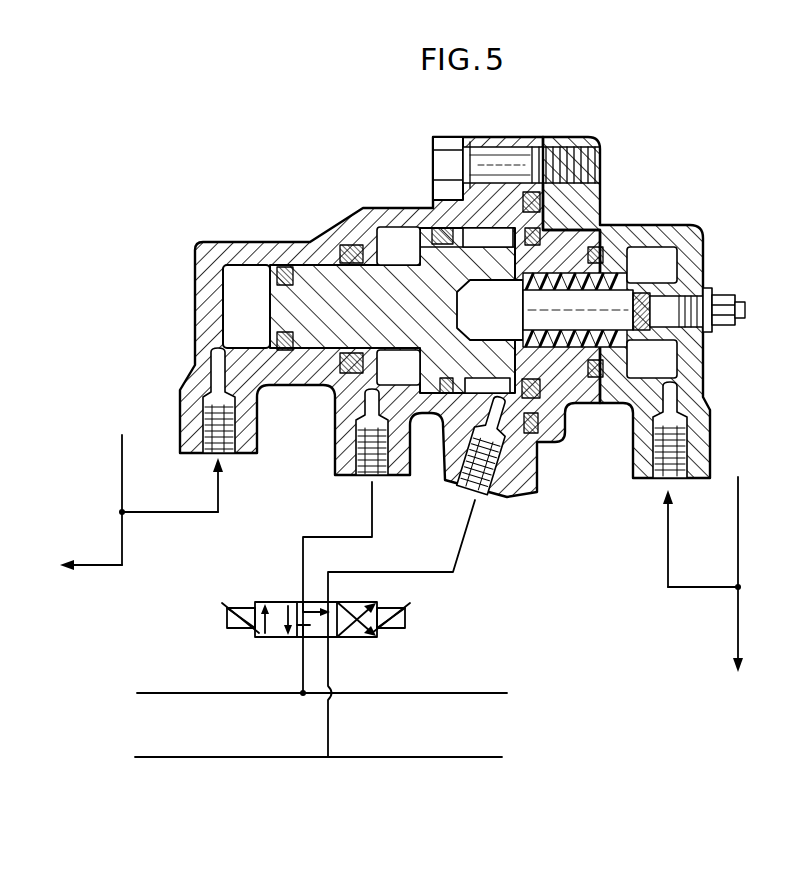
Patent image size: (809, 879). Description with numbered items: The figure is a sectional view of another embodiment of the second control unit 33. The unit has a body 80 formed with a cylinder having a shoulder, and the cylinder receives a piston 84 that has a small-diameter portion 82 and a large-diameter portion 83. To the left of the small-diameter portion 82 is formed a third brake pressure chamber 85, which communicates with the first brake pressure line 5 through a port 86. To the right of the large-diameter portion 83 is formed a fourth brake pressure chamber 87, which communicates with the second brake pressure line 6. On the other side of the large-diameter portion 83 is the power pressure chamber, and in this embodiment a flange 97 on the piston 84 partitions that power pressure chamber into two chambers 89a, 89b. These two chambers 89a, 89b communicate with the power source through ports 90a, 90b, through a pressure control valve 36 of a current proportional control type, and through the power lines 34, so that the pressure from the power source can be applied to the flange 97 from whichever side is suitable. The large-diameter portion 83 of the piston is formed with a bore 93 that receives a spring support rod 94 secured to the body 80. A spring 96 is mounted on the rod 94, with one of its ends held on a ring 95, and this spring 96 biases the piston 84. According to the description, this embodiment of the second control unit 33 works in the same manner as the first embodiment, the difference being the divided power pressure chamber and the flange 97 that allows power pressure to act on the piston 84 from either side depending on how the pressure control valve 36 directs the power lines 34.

The second control unit 33 is at (382, 195).
The body 80 is at (230, 240).
The small-diameter portion 82 is at (303, 280).
The large-diameter portion 83 is at (580, 350).
The piston 84 is at (577, 243).
The third brake pressure chamber 85 is at (225, 303).
The port 86 is at (214, 460).
The fourth brake pressure chamber 87 is at (673, 367).
The power pressure chamber 89a is at (380, 223).
The power pressure chamber 89b is at (485, 235).
The port 90a is at (365, 478).
The port 90b is at (467, 488).
The bore 93 is at (548, 237).
The spring support rod 94 is at (668, 310).
The ring 95 is at (620, 280).
The spring 96 is at (574, 380).
The flange 97 is at (428, 228).
The first brake pressure line 5 is at (122, 537).
The second brake pressure line 6 is at (740, 557).
The pressure control valve 36 is at (276, 602).
The power lines 34 is at (210, 700).